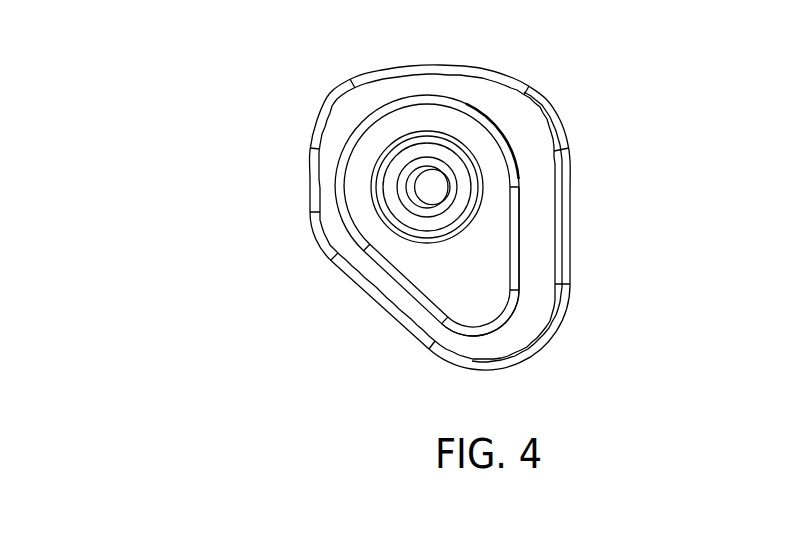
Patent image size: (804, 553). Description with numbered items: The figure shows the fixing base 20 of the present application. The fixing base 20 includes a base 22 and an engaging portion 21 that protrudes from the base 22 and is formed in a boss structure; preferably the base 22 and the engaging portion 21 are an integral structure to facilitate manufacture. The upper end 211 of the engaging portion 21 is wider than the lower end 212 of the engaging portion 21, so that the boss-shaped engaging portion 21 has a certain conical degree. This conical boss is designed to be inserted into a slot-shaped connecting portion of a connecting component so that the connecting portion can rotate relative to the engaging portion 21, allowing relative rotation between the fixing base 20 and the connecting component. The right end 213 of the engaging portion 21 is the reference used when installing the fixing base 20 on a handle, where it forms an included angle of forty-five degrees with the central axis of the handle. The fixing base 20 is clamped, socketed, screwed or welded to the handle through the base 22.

The fixing base 20 is at (88, 40).
The engaging portion 21 is at (432, 199).
The upper end of the engaging portion 211 is at (508, 128).
The lower end of the engaging portion 212 is at (522, 318).
The right end of the engaging portion 213 is at (522, 233).
The base 22 is at (548, 176).